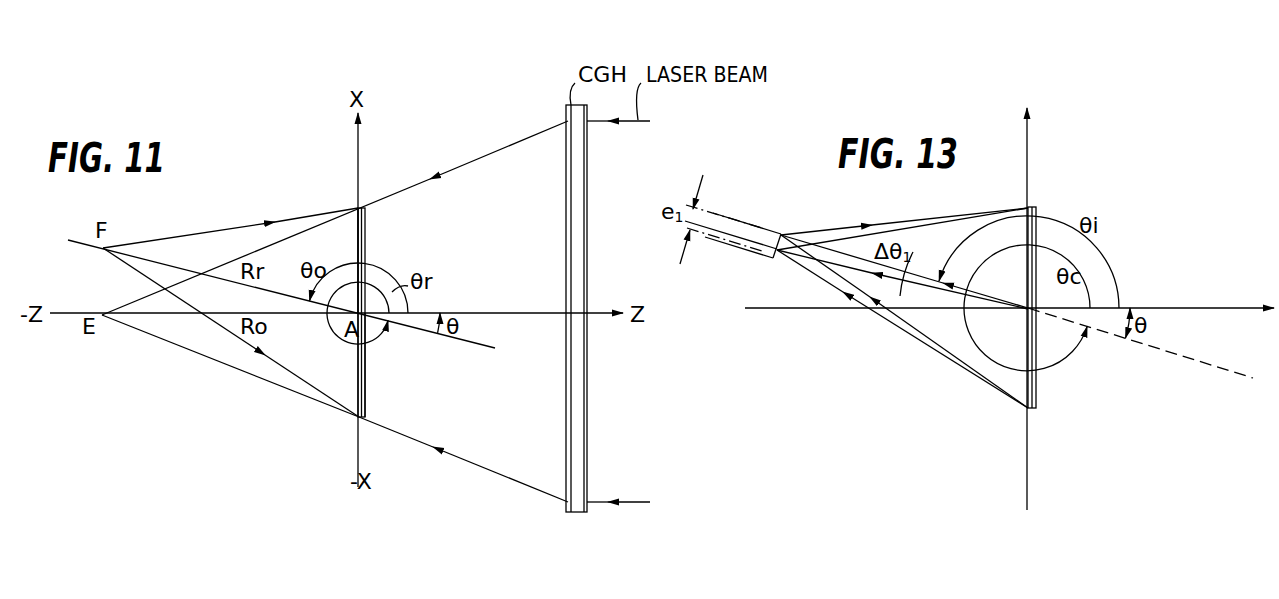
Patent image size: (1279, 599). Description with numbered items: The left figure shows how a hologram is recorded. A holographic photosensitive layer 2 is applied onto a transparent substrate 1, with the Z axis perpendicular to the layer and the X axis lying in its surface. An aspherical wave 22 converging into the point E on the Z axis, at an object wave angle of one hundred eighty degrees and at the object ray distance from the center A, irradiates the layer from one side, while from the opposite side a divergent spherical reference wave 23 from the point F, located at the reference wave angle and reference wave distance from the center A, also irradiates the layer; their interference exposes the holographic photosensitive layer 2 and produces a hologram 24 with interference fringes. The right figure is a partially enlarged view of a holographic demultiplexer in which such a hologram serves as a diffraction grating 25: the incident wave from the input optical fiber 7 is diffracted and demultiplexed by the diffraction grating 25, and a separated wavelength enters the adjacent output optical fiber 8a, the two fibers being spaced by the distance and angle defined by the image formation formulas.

In FIG. 11, the transparent substrate 1 is at (365, 223).
In FIG. 11, the holographic photosensitive layer 2 is at (357, 233).
In FIG. 11, the aspherical wave 22 is at (494, 156).
In FIG. 11, the divergent spherical reference wave 23 is at (248, 221).
In FIG. 11, the hologram 24 is at (365, 367).
In FIG. 13, the input optical fiber 7 is at (740, 215).
In FIG. 13, the output optical fiber 8a is at (727, 238).
In FIG. 13, the diffraction grating 25 is at (1027, 262).